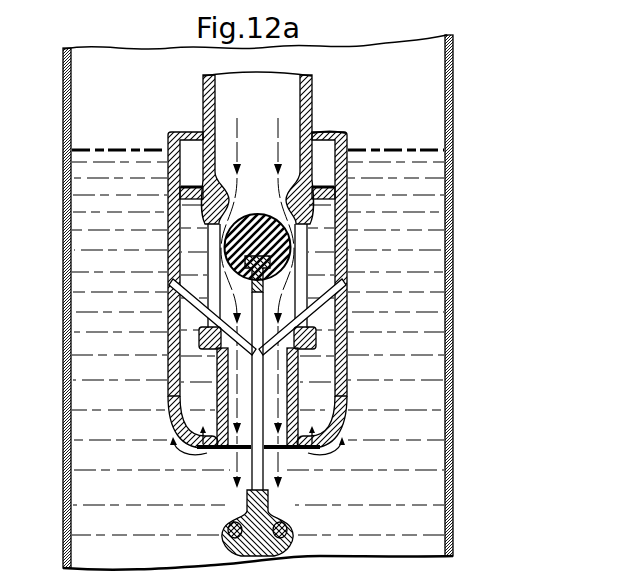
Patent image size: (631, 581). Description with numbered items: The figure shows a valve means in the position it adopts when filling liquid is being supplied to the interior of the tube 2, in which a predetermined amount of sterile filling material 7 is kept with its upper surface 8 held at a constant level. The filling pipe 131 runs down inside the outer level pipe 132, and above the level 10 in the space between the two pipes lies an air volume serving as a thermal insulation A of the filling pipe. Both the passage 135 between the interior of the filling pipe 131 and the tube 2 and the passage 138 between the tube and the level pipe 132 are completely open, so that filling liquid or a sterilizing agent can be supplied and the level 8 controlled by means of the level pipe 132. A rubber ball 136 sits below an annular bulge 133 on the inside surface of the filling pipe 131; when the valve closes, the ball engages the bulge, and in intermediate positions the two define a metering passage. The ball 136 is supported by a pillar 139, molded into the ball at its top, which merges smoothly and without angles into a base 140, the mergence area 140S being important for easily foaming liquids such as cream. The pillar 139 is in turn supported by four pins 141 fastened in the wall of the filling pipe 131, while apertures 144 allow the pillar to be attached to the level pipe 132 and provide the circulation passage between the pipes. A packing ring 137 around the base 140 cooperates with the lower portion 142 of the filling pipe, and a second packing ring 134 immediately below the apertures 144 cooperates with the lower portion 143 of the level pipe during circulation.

The thermal insulation A is at (197, 146).
The tube 2 is at (456, 289).
The filling material 7 is at (72, 378).
The upper surface of the liquid 8 is at (397, 146).
The level 10 is at (345, 180).
The filling pipe 131 is at (299, 97).
The level pipe 132 is at (345, 143).
The annular bulge 133 is at (180, 186).
The second packing ring 134 is at (322, 340).
The passage 135 is at (236, 448).
The ball 136 is at (271, 194).
The packing ring 137 is at (293, 530).
The passage 138 is at (198, 430).
The pillar 139 is at (270, 493).
The base 140 is at (250, 562).
The mergence area 140S is at (245, 522).
The pins 141 is at (190, 318).
The lower portion of the filling pipe 142 is at (298, 448).
The lower portion of the level pipe 143 is at (338, 424).
The apertures 144 is at (305, 265).